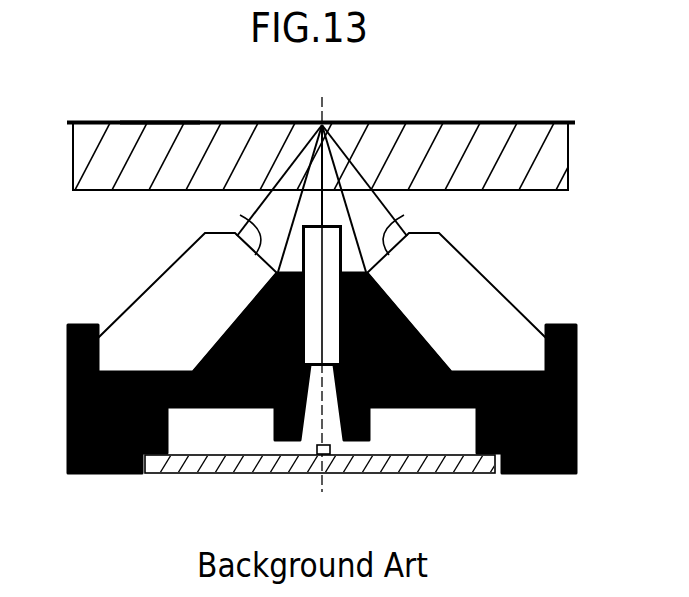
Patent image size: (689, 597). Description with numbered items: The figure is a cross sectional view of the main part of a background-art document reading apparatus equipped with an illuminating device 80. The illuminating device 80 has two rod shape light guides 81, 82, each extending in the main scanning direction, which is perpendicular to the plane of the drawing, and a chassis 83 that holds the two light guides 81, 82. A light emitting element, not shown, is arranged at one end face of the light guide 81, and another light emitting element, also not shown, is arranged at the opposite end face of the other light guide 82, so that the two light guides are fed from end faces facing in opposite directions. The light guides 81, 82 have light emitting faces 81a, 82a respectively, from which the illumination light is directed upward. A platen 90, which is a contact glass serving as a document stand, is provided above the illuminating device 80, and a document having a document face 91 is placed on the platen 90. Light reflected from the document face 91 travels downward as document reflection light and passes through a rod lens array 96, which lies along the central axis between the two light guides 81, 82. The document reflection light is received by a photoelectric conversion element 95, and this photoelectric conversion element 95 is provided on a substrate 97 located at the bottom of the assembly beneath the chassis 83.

The illuminating device 80 is at (106, 288).
The light guide 81 is at (200, 265).
The light emitting face 81a is at (240, 215).
The light guide 82 is at (443, 265).
The light emitting face 82a is at (404, 215).
The chassis 83 is at (112, 474).
The platen 90 is at (478, 150).
The document face 91 is at (158, 126).
The photoelectric conversion element 95 is at (330, 448).
The rod lens array 96 is at (313, 358).
The substrate 97 is at (443, 474).